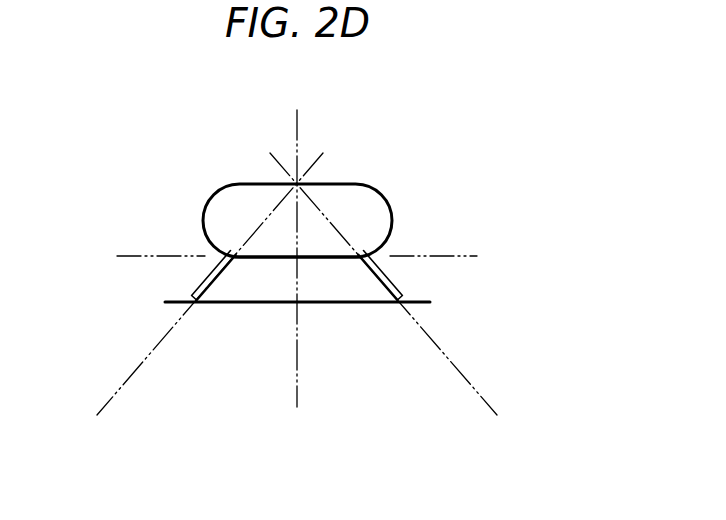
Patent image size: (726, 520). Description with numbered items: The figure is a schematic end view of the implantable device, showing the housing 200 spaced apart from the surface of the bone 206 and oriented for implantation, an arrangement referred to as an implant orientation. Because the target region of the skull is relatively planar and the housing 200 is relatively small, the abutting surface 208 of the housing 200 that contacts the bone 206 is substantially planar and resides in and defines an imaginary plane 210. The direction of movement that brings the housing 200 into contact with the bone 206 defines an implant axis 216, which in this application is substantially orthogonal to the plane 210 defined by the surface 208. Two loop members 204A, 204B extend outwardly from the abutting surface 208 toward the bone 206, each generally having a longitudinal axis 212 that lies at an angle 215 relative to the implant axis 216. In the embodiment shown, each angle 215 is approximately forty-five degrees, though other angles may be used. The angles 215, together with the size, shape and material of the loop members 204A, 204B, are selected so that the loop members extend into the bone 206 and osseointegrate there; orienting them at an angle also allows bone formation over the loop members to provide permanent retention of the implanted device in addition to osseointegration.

The housing 200 is at (366, 187).
The plane 210 is at (462, 255).
The loop member 204A is at (200, 282).
The loop member 204B is at (392, 279).
The bone 206 is at (377, 299).
The abutting surface 208 is at (274, 258).
The longitudinal axis 212 is at (133, 370).
The angle 215 is at (290, 362).
The implant axis 216 is at (297, 386).